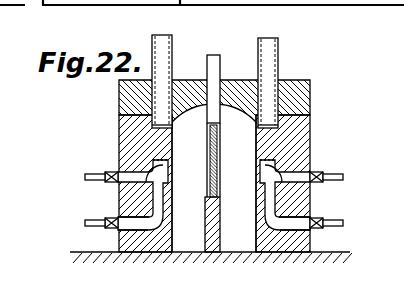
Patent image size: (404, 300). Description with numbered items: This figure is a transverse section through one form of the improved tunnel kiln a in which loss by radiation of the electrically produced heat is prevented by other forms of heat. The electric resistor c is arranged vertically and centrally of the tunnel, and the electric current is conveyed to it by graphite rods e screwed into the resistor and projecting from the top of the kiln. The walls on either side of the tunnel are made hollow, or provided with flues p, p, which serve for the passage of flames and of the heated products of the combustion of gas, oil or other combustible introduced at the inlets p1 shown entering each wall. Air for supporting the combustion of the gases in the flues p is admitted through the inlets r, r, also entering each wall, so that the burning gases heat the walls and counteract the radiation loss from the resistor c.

The tunnel kiln a is at (214, 166).
The electric resistor c is at (219, 176).
The graphite rod e is at (217, 69).
The flue p is at (274, 143).
The inlet p1 is at (357, 225).
The air inlet r is at (357, 179).